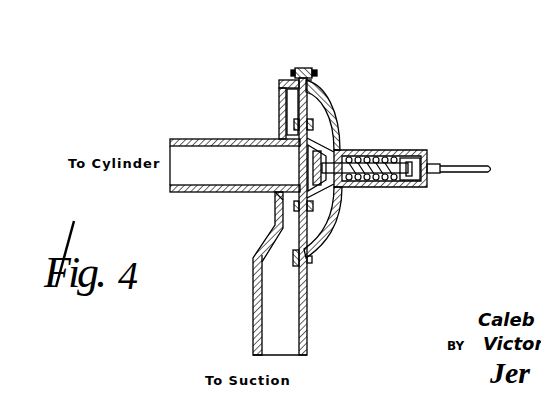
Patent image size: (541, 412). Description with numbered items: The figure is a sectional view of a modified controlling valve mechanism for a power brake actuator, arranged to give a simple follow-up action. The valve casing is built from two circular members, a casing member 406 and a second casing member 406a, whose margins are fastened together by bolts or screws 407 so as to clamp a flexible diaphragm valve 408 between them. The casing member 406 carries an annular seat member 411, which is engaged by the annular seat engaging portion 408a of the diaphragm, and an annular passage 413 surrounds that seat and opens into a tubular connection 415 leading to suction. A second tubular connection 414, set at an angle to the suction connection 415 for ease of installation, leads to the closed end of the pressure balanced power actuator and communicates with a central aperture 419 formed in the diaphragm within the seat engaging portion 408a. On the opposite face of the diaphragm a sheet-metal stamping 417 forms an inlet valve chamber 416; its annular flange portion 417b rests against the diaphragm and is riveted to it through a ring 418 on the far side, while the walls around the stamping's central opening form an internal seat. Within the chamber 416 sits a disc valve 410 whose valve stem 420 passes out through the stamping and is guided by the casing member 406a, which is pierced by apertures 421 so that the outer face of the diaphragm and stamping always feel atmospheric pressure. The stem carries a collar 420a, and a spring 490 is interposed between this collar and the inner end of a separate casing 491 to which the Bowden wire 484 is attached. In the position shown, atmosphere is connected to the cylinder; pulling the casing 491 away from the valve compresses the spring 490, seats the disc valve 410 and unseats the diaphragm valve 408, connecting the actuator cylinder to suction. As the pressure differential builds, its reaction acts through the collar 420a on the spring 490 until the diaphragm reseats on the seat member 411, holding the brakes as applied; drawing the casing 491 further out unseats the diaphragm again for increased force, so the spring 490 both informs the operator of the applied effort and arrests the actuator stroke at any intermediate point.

The casing member 406 is at (283, 80).
The casing member 406a is at (313, 93).
The bolts or screws 407 is at (292, 68).
The diaphragm valve 408 is at (323, 118).
The annular seat engaging portion 408a is at (281, 218).
The disc valve 410 is at (300, 146).
The annular seat member 411 is at (296, 124).
The annular passage 413 is at (283, 90).
The tubular connection 414 is at (171, 183).
The tubular connection 415 is at (294, 357).
The inlet valve chamber 416 is at (312, 204).
The stamping 417 is at (330, 152).
The annular flange portion 417b is at (311, 252).
The ring 418 is at (290, 100).
The central aperture 419 is at (280, 195).
The valve stem 420 is at (378, 160).
The collar 420a is at (414, 156).
The apertures 421 is at (330, 142).
The Bowden wire 484 is at (480, 167).
The spring 490 is at (386, 187).
The casing 491 is at (434, 164).